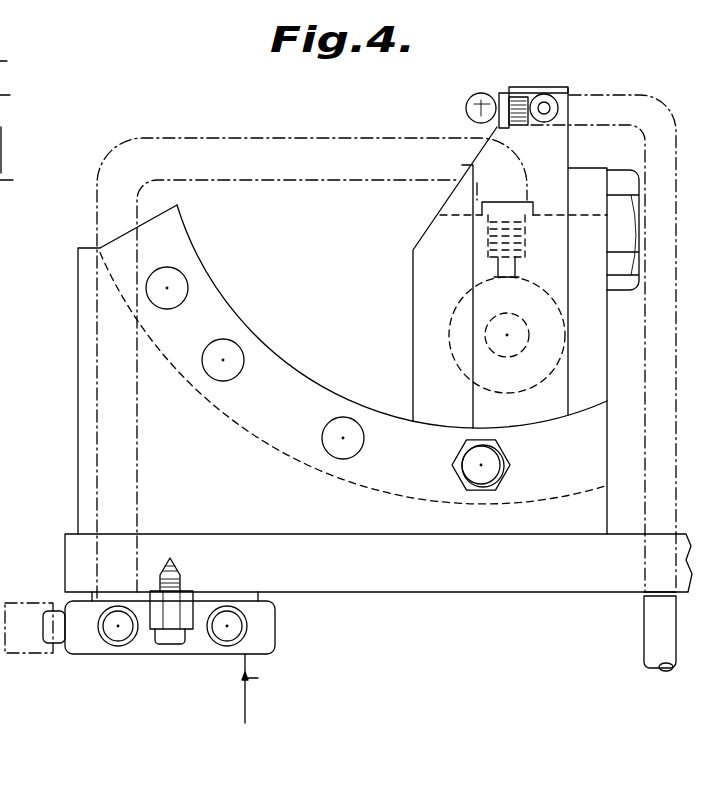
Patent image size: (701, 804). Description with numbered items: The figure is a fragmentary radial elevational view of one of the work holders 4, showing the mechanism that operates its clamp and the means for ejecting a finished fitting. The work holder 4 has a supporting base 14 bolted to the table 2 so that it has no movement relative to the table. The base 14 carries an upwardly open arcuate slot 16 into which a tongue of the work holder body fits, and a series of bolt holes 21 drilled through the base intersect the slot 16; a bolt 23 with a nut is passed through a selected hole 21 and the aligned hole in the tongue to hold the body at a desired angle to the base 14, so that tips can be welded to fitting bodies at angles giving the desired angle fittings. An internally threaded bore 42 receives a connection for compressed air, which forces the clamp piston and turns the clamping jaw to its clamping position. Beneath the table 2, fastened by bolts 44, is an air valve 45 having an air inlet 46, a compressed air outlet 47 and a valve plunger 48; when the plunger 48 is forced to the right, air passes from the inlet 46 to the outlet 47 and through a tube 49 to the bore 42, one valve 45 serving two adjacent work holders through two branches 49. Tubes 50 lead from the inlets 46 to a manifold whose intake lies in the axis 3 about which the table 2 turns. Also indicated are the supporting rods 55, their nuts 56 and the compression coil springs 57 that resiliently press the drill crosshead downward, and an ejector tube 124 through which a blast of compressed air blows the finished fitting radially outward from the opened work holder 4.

The table 2 is at (485, 586).
The axis 3 is at (15, 654).
The work holder 4 is at (598, 350).
The supporting base 14 is at (86, 335).
The arcuate slot 16 is at (280, 455).
The bolt holes 21 is at (213, 350).
The bolt 23 is at (498, 458).
The internally threaded bore 42 is at (519, 237).
The bolts 44 is at (182, 578).
The air valve 45 is at (270, 619).
The air inlet 46 is at (222, 647).
The compressed air outlet 47 is at (123, 647).
The valve plunger 48 is at (60, 645).
The tube 49 is at (188, 137).
The tubes 50 is at (265, 688).
The supporting rods 55 is at (16, 60).
The nuts 56 is at (19, 159).
The compression coil springs 57 is at (18, 96).
The ejector tubes 124 is at (681, 88).